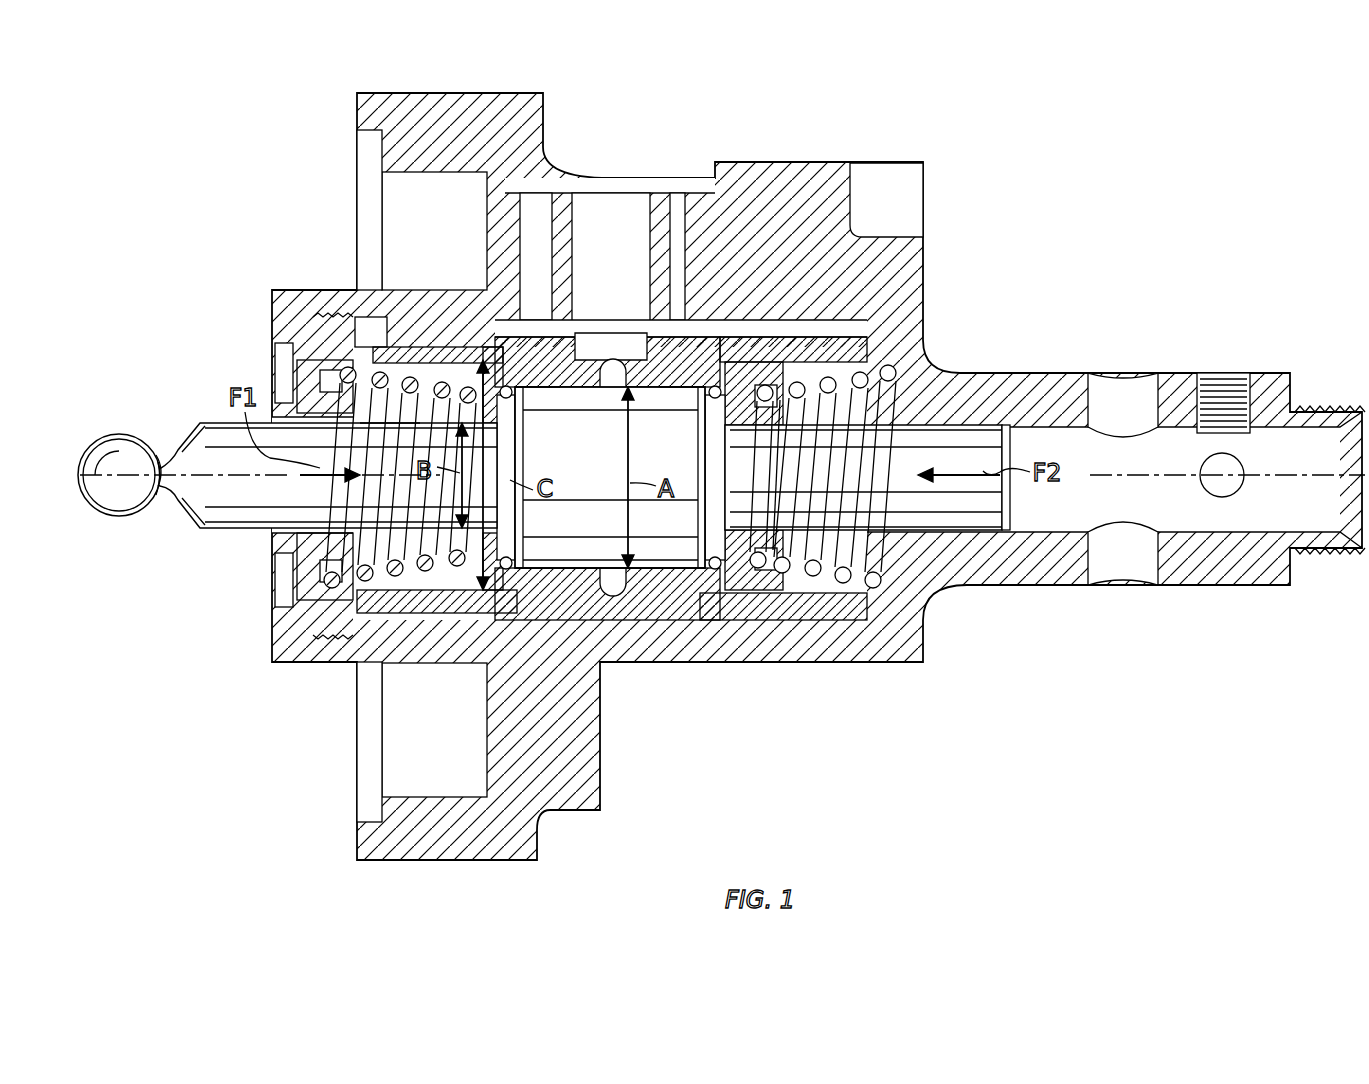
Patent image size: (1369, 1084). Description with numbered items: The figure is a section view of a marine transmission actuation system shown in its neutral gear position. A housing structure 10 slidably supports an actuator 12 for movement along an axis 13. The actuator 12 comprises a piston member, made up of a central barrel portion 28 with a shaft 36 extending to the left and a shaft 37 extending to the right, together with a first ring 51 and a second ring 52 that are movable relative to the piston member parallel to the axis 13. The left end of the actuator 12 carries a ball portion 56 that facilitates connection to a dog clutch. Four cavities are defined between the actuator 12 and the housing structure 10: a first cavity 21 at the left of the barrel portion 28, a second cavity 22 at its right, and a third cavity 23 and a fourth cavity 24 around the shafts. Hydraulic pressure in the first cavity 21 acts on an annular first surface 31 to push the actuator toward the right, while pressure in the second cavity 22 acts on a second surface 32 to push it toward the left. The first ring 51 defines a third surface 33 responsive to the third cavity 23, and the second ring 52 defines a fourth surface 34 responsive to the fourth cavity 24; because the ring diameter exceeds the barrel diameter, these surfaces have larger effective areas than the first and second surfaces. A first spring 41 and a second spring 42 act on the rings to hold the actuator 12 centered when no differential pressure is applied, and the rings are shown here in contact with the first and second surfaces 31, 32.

The housing structure 10 is at (918, 263).
The actuator 12 is at (589, 477).
The axis 13 is at (121, 482).
The first cavity 21 is at (523, 390).
The second cavity 22 is at (700, 397).
The third cavity 23 is at (410, 582).
The fourth cavity 24 is at (810, 587).
The barrel portion 28 is at (687, 553).
The first surface 31 is at (507, 467).
The second surface 32 is at (718, 467).
The third surface 33 is at (428, 395).
The fourth surface 34 is at (792, 413).
The shaft 36 is at (220, 510).
The shaft 37 is at (975, 438).
The first spring 41 is at (378, 407).
The second spring 42 is at (825, 410).
The first ring 51 is at (523, 553).
The second ring 52 is at (745, 542).
The ball portion 56 is at (122, 442).